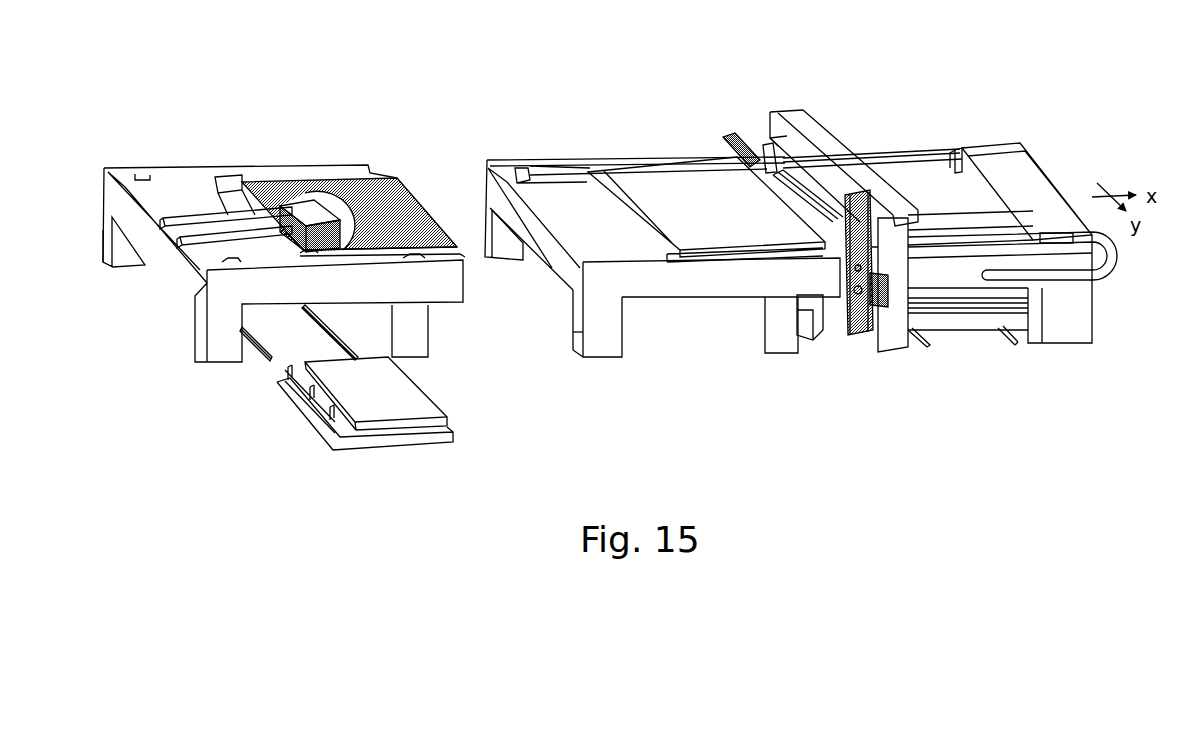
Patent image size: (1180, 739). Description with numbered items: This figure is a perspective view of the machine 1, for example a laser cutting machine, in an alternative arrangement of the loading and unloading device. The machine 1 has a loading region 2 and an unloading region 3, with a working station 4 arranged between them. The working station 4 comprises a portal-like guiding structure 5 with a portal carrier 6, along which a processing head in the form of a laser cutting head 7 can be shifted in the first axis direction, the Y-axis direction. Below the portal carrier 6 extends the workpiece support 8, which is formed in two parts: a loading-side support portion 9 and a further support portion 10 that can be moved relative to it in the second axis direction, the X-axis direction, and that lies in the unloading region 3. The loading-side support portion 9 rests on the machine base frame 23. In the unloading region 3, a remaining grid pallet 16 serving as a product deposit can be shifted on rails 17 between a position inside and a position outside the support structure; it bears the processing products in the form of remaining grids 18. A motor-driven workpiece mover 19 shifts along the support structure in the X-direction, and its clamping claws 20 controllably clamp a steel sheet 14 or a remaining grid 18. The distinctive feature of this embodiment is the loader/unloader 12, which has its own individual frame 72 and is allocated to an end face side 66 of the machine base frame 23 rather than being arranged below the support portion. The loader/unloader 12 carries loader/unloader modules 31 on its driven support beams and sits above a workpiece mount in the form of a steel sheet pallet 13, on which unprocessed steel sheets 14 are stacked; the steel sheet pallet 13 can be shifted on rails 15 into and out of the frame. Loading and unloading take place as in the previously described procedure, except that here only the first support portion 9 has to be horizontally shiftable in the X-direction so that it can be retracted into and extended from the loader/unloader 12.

The machine 1 is at (801, 215).
The loading region 2 is at (662, 231).
The unloading region 3 is at (950, 232).
The working station 4 is at (786, 100).
The portal-like guiding structure 5 is at (820, 110).
The portal carrier 6 is at (770, 125).
The laser cutting head 7 is at (857, 236).
The workpiece support 8 is at (716, 134).
The loading-side support portion 9 is at (381, 193).
The further support portion 10 is at (935, 157).
The loader/unloader 12 is at (270, 219).
The steel sheet pallet 13 is at (346, 452).
The steel sheet 14 is at (416, 408).
The rails 15 is at (261, 357).
The remaining grid pallet 16 is at (1011, 320).
The rails 17 is at (925, 350).
The remaining grids 18 is at (985, 316).
The workpiece mover 19 is at (1040, 190).
The clamping claws 20 is at (970, 168).
The machine base frame 23 is at (600, 344).
The loader/unloader module 31 is at (275, 251).
The end face side 66 is at (579, 333).
The individual frame 72 is at (102, 234).